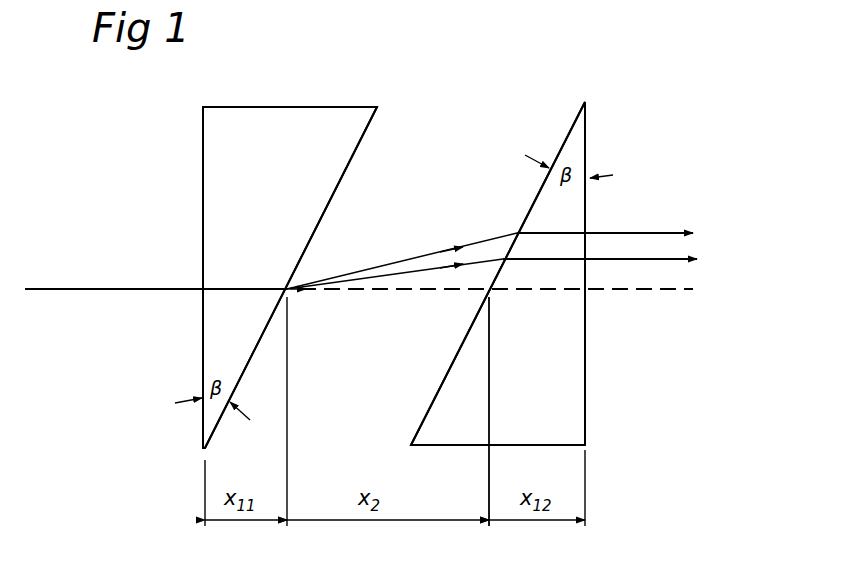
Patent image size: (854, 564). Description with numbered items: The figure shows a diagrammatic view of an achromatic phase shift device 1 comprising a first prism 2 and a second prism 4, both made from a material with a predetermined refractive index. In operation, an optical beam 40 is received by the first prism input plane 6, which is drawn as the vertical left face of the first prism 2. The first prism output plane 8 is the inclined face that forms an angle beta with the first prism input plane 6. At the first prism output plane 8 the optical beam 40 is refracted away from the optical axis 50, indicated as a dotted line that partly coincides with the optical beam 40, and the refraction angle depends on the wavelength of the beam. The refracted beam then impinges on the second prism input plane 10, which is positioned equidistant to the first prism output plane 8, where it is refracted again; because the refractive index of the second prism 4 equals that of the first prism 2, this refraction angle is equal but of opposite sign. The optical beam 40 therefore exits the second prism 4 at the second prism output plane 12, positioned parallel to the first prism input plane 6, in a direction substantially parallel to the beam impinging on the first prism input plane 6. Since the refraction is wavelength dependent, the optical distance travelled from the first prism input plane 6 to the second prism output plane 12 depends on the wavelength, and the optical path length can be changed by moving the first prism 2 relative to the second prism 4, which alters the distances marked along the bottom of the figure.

The achromatic phase shift device 1 is at (613, 137).
The first prism 2 is at (318, 124).
The second prism 4 is at (586, 124).
The first prism input plane 6 is at (203, 125).
The first prism output plane 8 is at (360, 140).
The second prism input plane 10 is at (567, 129).
The second prism output plane 12 is at (586, 399).
The optical beam 40 is at (115, 291).
The optical axis 50 is at (636, 289).